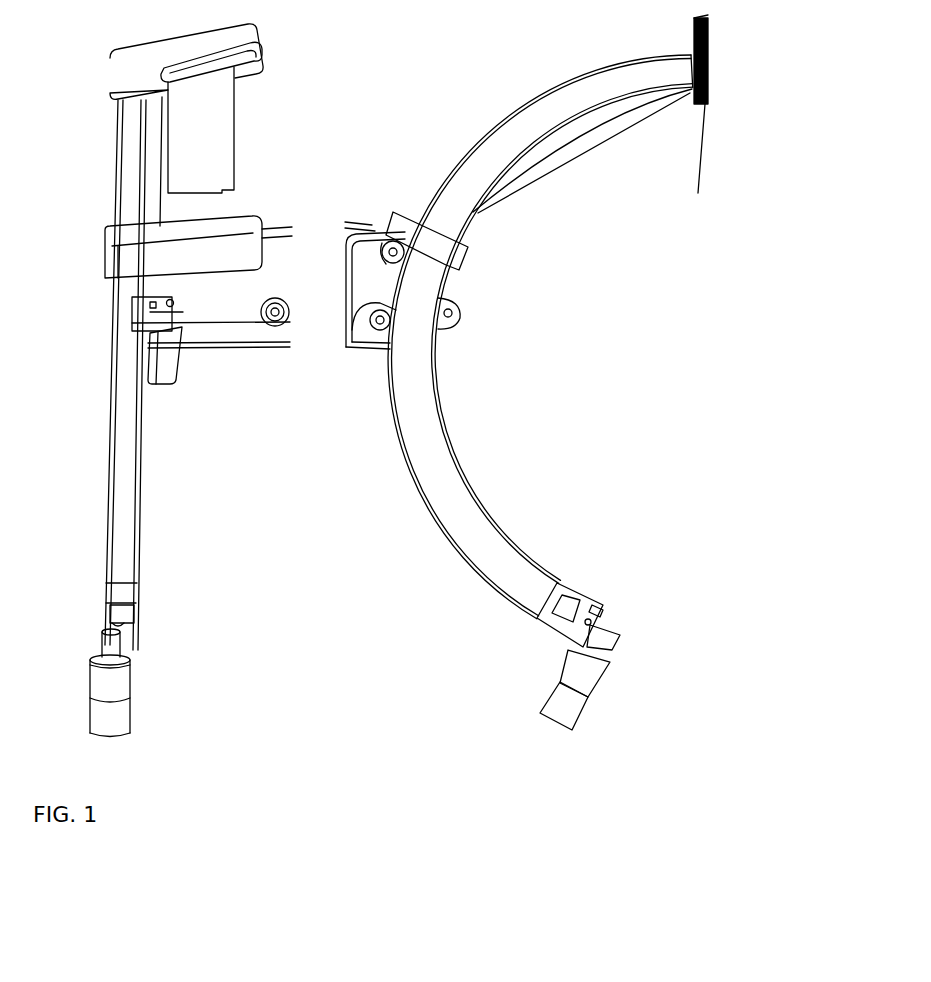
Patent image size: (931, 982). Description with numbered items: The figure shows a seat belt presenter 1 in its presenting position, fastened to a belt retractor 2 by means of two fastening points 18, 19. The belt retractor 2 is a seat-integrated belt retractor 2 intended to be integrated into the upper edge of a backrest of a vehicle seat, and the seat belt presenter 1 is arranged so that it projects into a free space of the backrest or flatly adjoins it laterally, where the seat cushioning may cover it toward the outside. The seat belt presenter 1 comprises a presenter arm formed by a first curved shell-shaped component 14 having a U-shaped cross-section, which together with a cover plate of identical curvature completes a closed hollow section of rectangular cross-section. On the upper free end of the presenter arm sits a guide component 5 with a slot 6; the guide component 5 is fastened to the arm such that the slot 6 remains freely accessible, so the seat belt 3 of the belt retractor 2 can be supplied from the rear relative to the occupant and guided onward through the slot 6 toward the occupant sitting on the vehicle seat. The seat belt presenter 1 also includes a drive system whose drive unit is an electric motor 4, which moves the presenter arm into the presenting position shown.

The seat belt presenter 1 is at (399, 352).
The belt retractor 2 is at (274, 268).
The seat belt 3 is at (223, 137).
The electric motor 4 is at (120, 690).
The guide component 5 is at (252, 30).
The slot 6 is at (247, 60).
The first curved shell-shaped component 14 is at (532, 105).
The fastening point 18 is at (380, 325).
The fastening point 19 is at (390, 248).